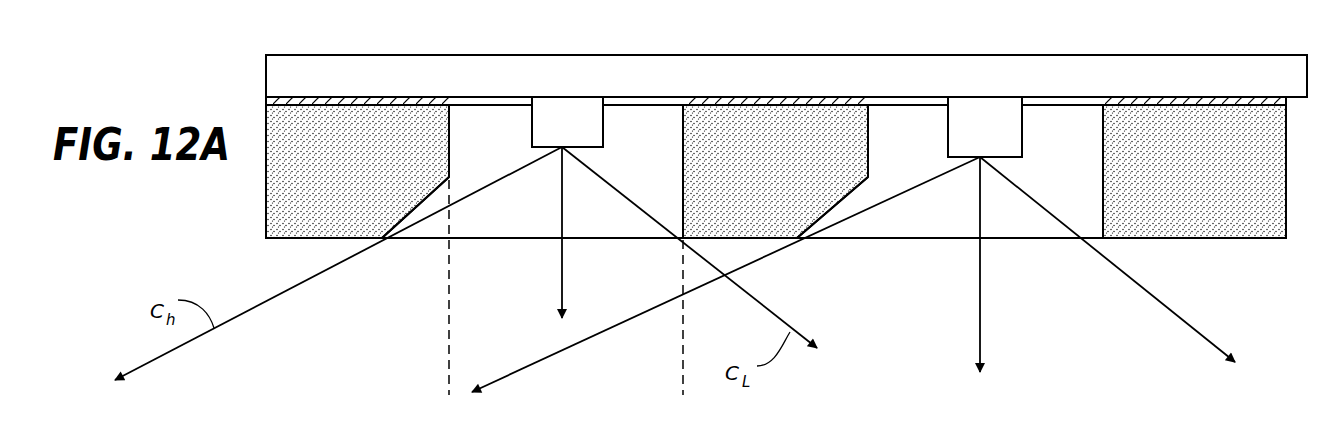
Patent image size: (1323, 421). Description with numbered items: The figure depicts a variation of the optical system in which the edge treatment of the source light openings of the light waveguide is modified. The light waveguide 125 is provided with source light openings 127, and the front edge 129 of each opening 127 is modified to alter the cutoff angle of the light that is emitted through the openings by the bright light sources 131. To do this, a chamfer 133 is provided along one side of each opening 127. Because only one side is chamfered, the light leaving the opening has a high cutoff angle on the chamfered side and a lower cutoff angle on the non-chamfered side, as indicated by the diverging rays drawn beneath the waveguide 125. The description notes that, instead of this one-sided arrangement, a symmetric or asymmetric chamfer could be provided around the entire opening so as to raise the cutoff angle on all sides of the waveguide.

The light waveguide 125 is at (286, 186).
The source light opening 127 is at (625, 219).
The front edge 129 is at (680, 240).
The bright light source 131 is at (527, 108).
The chamfer 133 is at (431, 185).